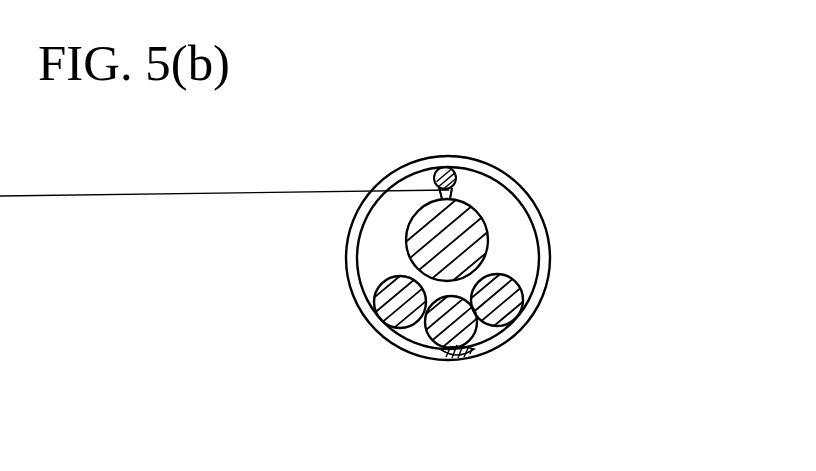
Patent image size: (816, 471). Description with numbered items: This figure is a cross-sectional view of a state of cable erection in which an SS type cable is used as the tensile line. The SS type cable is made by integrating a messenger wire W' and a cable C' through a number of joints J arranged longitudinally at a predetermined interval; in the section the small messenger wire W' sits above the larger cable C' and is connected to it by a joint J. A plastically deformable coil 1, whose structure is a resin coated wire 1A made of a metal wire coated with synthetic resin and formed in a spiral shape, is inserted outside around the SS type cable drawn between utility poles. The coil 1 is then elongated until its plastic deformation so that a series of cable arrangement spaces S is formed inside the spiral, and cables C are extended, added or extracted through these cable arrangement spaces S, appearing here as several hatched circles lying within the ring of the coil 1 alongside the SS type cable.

The plastically deformable coil 1 is at (491, 163).
The resin coated wire 1A is at (531, 201).
The cable arrangement space S is at (523, 256).
The cable C' is at (367, 240).
The messenger wire W' is at (228, 136).
The joint J is at (450, 190).
The cable C is at (425, 356).